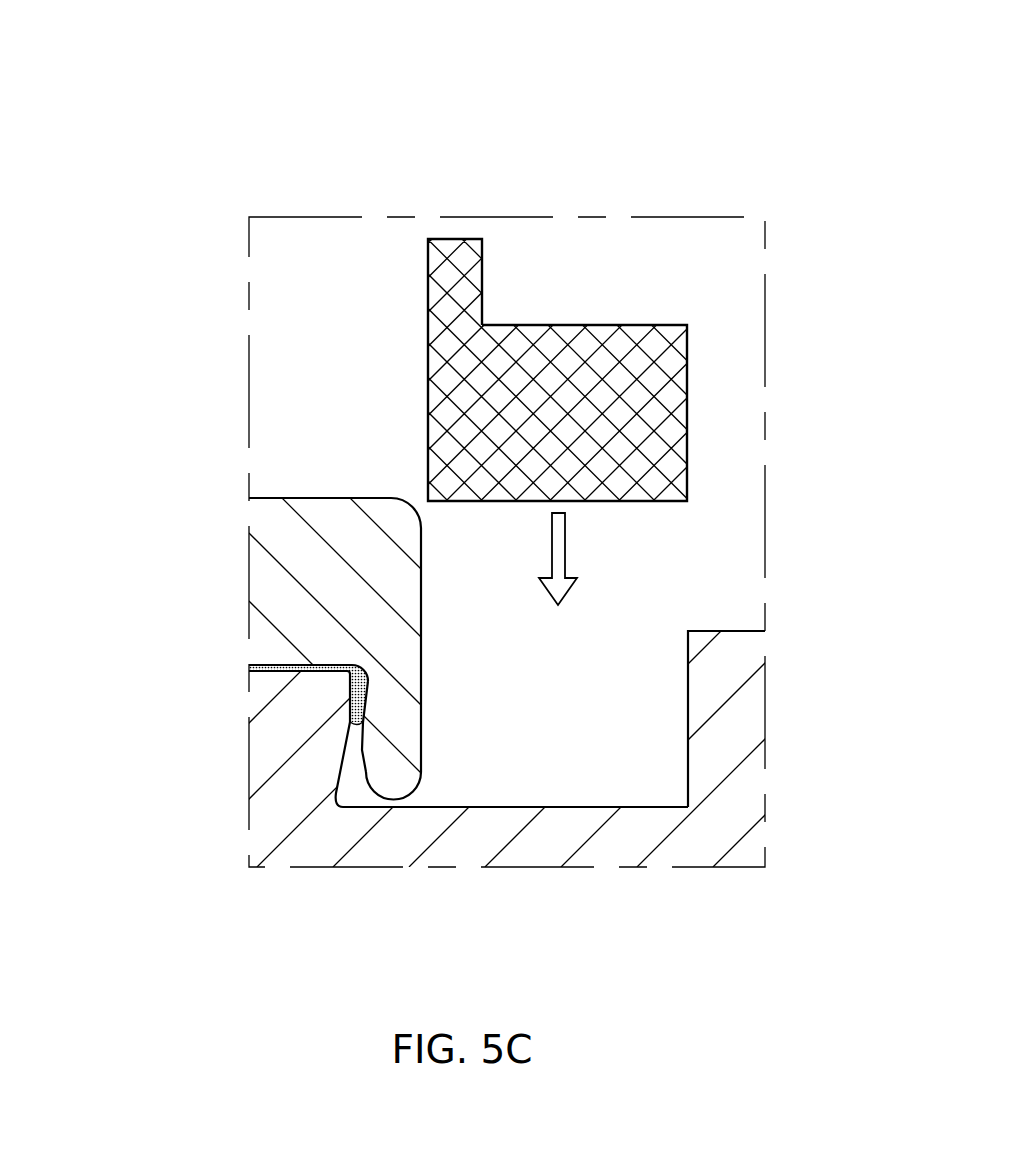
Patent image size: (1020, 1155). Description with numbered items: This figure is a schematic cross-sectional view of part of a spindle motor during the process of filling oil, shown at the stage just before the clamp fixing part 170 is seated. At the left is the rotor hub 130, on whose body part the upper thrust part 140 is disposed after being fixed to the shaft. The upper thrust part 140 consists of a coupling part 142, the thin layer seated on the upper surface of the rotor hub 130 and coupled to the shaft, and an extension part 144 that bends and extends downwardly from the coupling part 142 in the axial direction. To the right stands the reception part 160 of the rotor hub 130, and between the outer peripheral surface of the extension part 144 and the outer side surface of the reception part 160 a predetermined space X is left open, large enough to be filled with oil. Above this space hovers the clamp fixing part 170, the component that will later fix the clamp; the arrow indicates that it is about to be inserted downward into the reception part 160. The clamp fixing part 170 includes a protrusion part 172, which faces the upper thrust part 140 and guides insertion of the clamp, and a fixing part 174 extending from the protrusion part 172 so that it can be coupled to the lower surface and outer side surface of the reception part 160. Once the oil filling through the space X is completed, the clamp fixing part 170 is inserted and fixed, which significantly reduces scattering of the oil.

The rotor hub 130 is at (685, 850).
The upper thrust part 140 is at (226, 706).
The coupling part 142 is at (274, 647).
The extension part 144 is at (390, 775).
The reception part 160 is at (605, 807).
The clamp fixing part 170 is at (551, 258).
The protrusion part 172 is at (600, 347).
The fixing part 174 is at (458, 262).
The space X is at (637, 687).